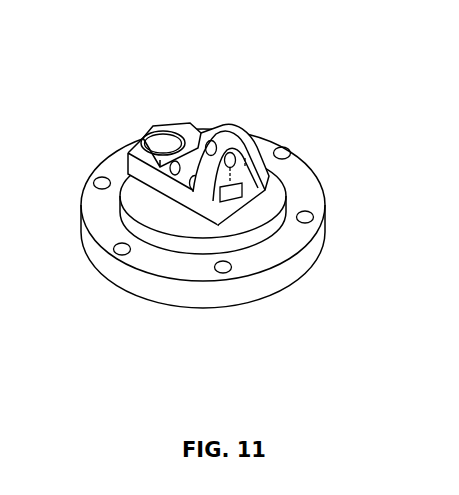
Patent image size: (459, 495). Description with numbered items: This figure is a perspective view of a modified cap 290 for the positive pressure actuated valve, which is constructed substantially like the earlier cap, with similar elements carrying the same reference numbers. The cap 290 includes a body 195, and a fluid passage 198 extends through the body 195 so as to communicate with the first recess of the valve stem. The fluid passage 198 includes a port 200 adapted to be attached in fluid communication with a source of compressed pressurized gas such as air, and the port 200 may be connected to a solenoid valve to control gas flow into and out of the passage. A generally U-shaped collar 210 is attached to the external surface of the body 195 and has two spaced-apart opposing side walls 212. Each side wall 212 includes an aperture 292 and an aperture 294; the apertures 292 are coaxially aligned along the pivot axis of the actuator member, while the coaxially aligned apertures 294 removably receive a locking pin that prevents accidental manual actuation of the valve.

The cap 290 is at (107, 49).
The body 195 is at (306, 193).
The aperture 294 is at (148, 152).
The aperture 292 is at (193, 191).
The port 200 is at (151, 134).
The fluid passage 198 is at (163, 143).
The collar 210 is at (243, 155).
The side walls 212 is at (226, 140).